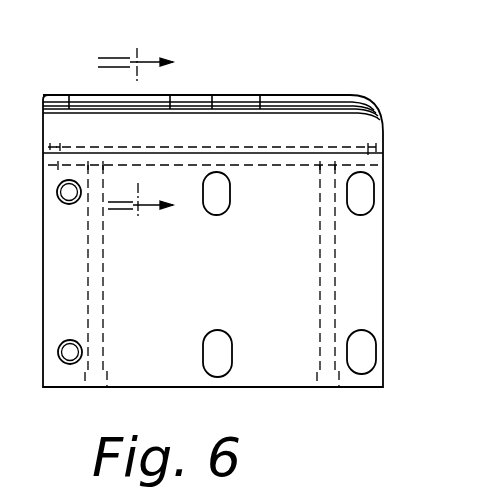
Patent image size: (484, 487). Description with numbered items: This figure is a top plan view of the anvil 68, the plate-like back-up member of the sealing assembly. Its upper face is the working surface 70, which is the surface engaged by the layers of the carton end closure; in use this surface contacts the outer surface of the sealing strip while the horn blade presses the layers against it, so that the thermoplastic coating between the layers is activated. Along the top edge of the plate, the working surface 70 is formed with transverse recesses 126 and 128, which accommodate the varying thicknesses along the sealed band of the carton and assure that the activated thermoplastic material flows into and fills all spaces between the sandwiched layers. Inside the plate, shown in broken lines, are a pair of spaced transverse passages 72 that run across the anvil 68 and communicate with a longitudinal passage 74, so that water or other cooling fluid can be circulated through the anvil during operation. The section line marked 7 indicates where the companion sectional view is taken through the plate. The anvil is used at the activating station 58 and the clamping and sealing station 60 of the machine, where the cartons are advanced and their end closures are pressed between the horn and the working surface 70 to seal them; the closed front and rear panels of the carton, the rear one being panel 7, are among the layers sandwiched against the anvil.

The clamping and sealing station 60 is at (91, 78).
The rear panel 7 is at (135, 136).
The transverse recess 126 is at (212, 95).
The transverse recess 128 is at (260, 95).
The activating station 58 is at (296, 88).
The working surface 70 is at (312, 95).
The anvil 68 is at (383, 270).
The longitudinal passage 74 is at (281, 167).
The transverse passages 72 is at (103, 289).